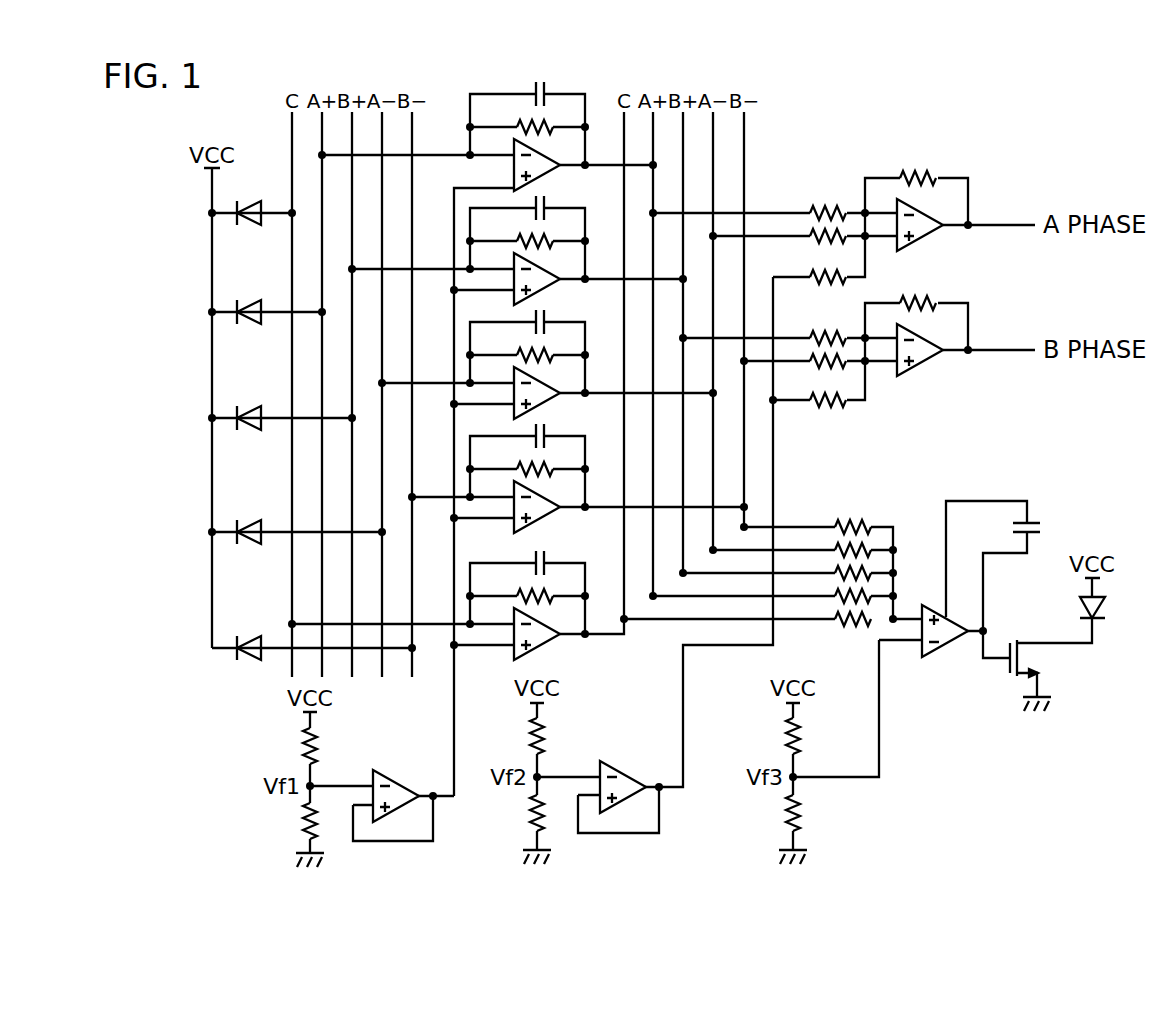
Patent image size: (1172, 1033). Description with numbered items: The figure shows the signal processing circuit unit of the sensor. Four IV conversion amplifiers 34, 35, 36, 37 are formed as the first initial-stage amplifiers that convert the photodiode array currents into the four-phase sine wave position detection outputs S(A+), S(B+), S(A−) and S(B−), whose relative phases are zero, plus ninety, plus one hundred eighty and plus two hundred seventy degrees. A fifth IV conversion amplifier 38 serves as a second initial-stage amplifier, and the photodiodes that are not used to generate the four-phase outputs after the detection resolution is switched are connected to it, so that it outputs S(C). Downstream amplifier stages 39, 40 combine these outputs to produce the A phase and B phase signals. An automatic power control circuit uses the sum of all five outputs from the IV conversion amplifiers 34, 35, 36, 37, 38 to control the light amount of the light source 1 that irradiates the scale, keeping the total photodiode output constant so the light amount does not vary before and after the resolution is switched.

The light source 1 is at (1105, 606).
The IV conversion amplifier 34 is at (548, 176).
The IV conversion amplifier 35 is at (548, 290).
The IV conversion amplifier 36 is at (548, 404).
The IV conversion amplifier 37 is at (548, 518).
The IV conversion amplifier 38 is at (548, 645).
The A phase output operational amplifier 39 is at (930, 236).
The B phase output operational amplifier 40 is at (930, 361).